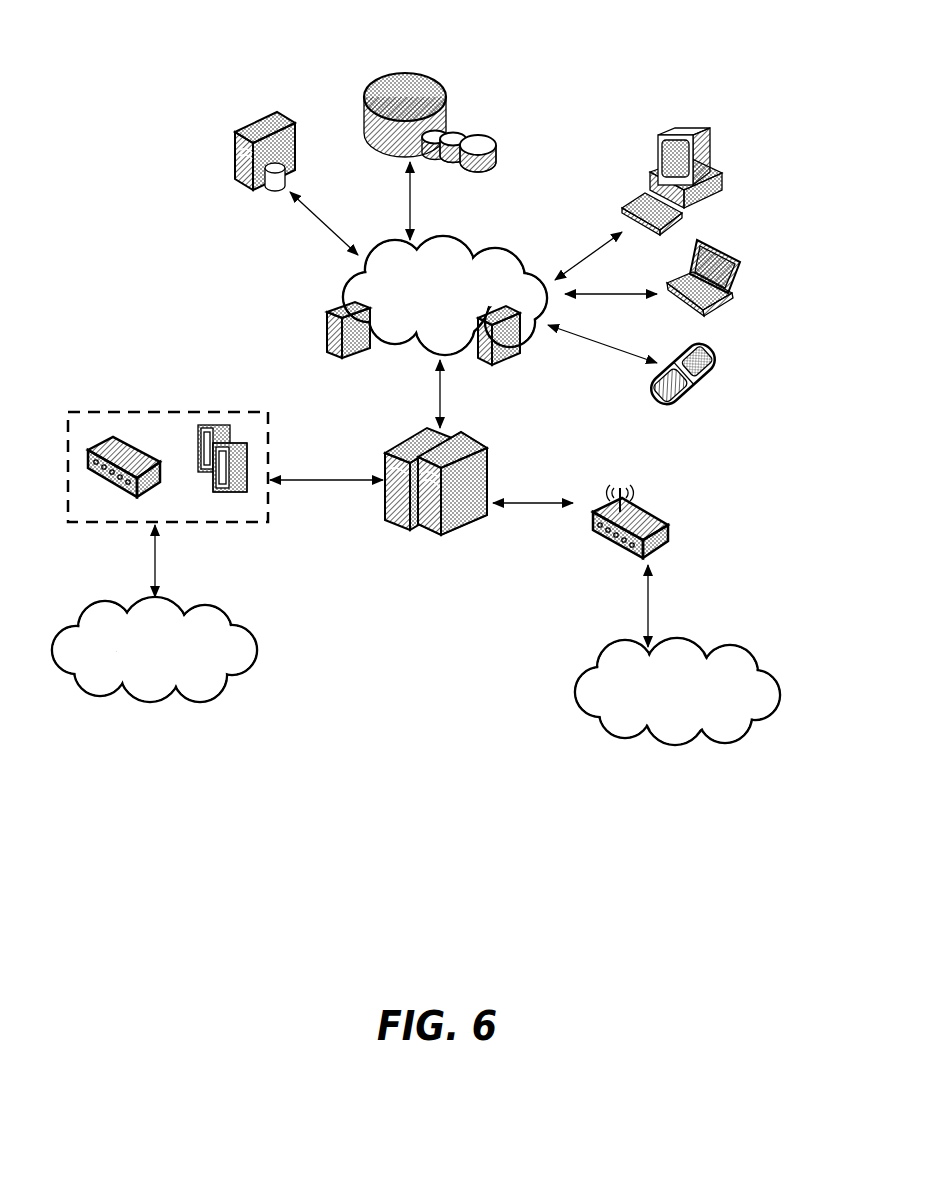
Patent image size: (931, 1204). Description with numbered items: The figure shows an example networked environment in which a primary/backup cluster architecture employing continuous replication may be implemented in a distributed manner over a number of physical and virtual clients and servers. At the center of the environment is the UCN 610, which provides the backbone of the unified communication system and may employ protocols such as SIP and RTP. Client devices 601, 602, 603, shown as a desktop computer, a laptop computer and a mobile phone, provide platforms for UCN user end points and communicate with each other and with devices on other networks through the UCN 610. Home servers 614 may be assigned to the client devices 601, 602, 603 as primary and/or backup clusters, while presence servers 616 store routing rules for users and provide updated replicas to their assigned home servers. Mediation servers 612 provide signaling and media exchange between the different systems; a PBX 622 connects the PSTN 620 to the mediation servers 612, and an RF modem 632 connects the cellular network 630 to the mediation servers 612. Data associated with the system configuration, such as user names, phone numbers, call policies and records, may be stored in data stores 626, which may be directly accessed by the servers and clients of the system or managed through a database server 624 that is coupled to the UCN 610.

The client device 601 is at (710, 122).
The client device 602 is at (740, 240).
The client device 603 is at (713, 345).
The UCN 610 is at (446, 232).
The mediation server 612 is at (416, 430).
The home server 614 is at (487, 368).
The presence server 616 is at (336, 300).
The PSTN 620 is at (118, 706).
The PBX 622 is at (116, 410).
The database server 624 is at (265, 196).
The data store 626 is at (420, 50).
The cellular network 630 is at (640, 746).
The RF modem 632 is at (622, 468).